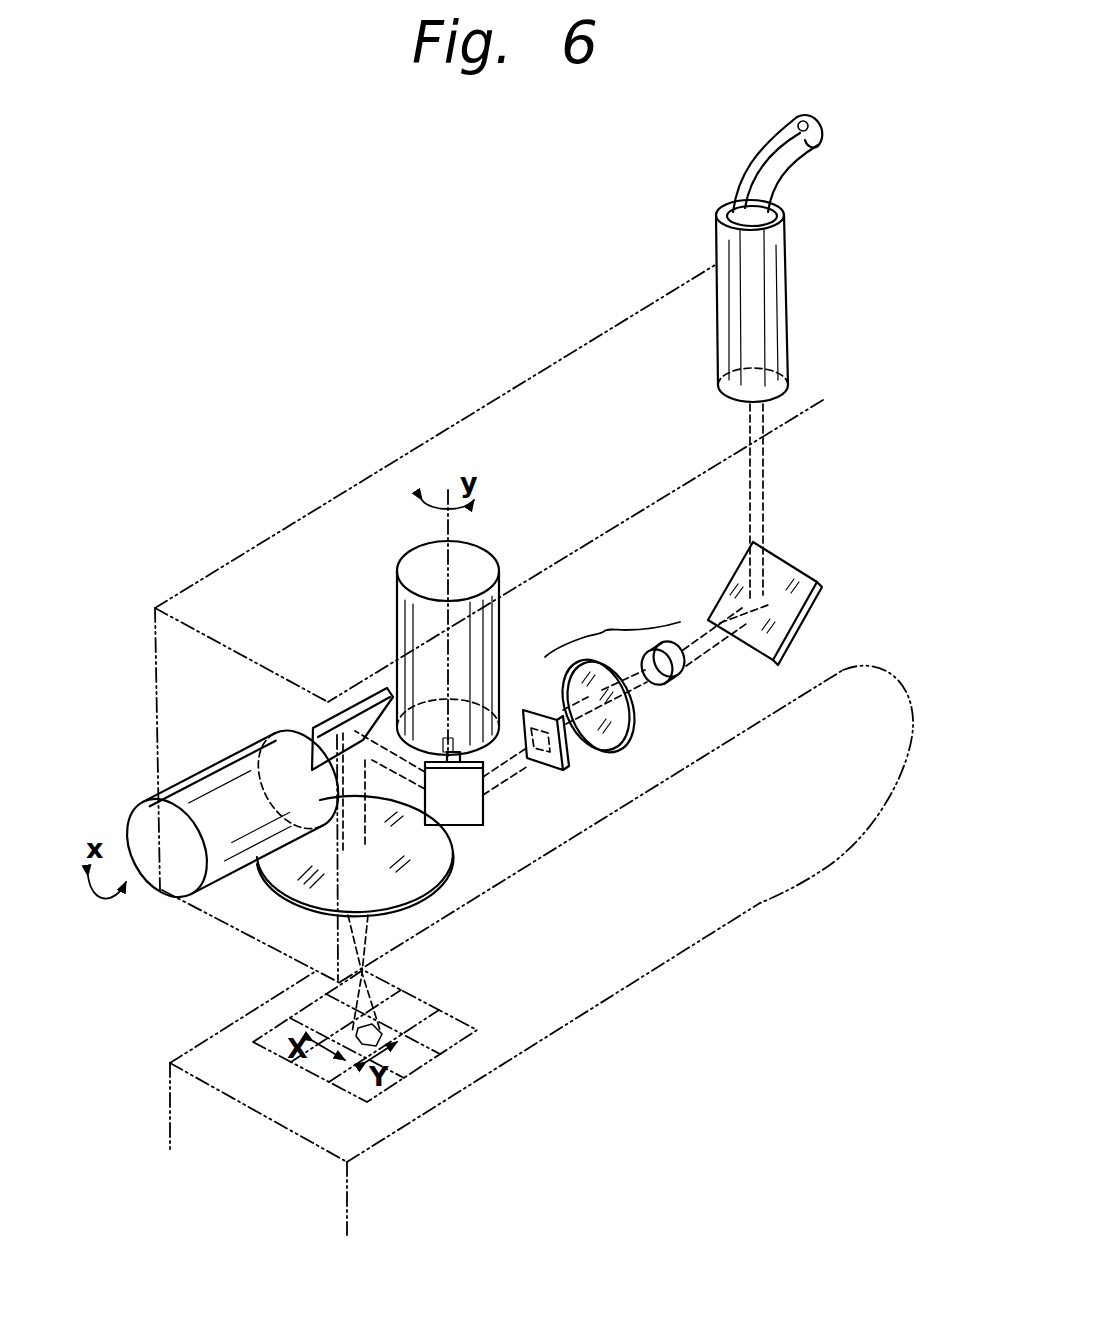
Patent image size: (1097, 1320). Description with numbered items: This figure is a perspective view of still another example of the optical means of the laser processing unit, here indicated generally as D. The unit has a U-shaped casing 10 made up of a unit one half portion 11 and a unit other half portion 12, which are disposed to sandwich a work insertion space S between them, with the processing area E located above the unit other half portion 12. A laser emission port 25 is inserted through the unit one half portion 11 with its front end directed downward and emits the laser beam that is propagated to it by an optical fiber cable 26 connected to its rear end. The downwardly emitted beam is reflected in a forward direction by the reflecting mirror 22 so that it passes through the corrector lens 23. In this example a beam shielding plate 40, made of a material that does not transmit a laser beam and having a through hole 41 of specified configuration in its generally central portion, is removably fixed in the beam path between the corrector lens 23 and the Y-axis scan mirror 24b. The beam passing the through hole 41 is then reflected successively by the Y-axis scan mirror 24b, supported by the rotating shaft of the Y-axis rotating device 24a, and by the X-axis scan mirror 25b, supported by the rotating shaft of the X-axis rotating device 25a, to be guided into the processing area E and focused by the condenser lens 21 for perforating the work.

The casing 10 is at (331, 493).
The unit one half portion 11 is at (221, 562).
The unit other half portion 12 is at (258, 1115).
The condenser lens 21 is at (364, 884).
The reflecting mirror 22 is at (803, 612).
The corrector lens 23 is at (645, 680).
The Y-axis rotating device 24a is at (470, 560).
The Y-axis scan mirror 24b is at (473, 830).
The laser emission port 25 is at (778, 282).
The X-axis rotating device 25a is at (178, 775).
The X-axis scan mirror 25b is at (348, 700).
The optical fiber cable 26 is at (797, 167).
The beam shielding plate 40 is at (557, 757).
The through hole 41 is at (543, 745).
The device D is at (487, 322).
The work insertion space S is at (640, 958).
The processing area E is at (454, 1046).